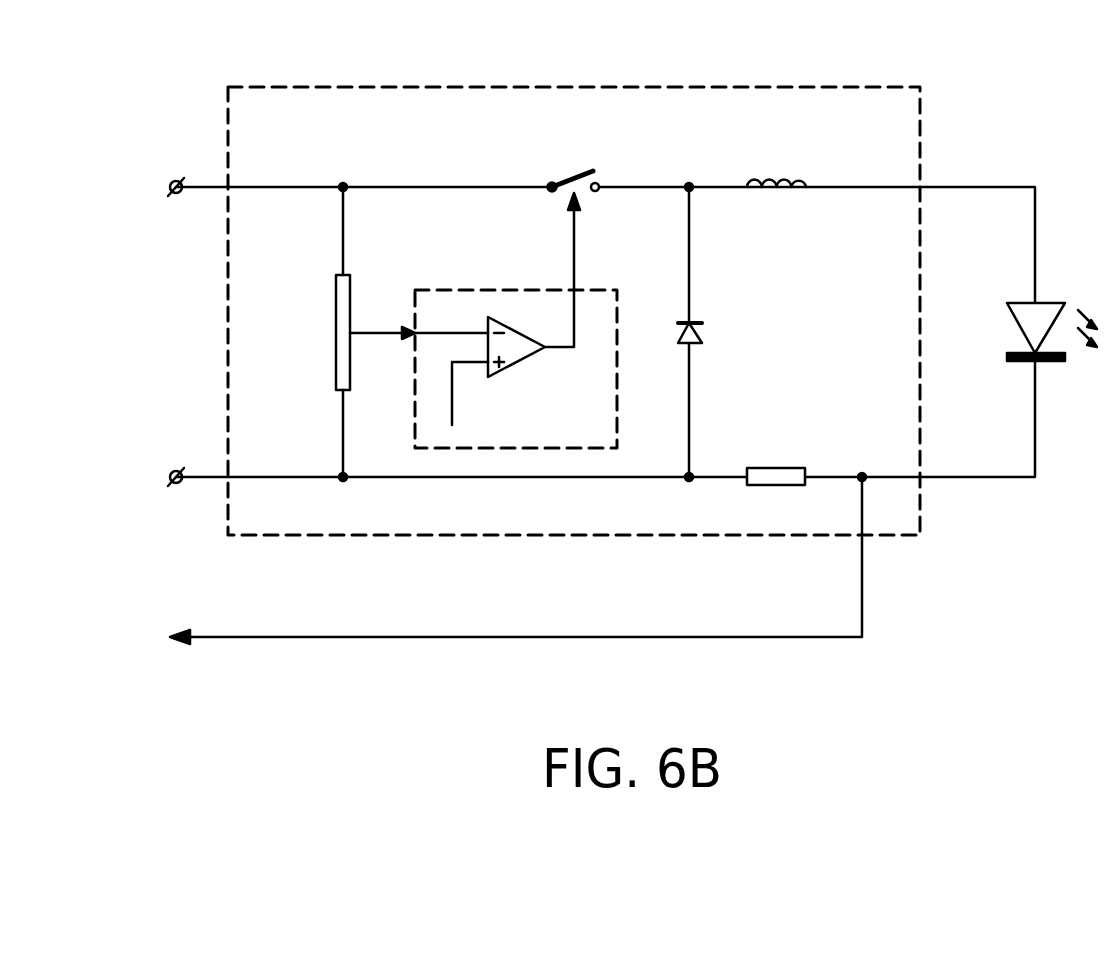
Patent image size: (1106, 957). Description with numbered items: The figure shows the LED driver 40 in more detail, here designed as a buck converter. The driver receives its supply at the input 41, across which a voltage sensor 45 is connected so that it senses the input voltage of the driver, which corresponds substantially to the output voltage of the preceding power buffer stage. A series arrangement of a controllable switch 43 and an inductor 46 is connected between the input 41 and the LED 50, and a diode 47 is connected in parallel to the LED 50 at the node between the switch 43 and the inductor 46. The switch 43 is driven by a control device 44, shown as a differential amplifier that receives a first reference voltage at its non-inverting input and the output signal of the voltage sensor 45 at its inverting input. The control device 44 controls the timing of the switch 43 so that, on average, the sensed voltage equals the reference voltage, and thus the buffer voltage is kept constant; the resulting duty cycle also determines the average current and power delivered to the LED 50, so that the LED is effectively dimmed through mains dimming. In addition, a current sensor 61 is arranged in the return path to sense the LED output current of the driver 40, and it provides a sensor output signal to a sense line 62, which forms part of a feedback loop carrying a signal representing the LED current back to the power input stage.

The LED driver 40 is at (745, 538).
The input 41 is at (175, 180).
The controllable switch 43 is at (570, 170).
The control device 44 is at (477, 286).
The voltage sensor 45 is at (334, 351).
The inductor 46 is at (769, 177).
The diode 47 is at (705, 332).
The LED 50 is at (1015, 323).
The current sensor 61 is at (784, 465).
The sense line 62 is at (745, 640).